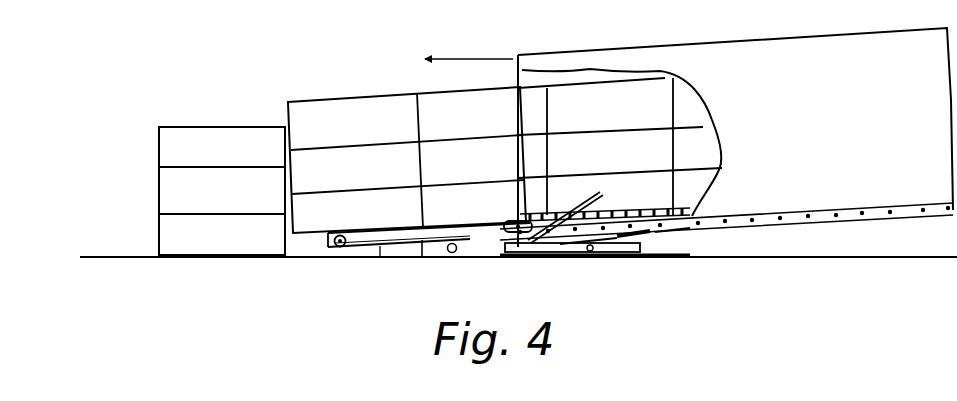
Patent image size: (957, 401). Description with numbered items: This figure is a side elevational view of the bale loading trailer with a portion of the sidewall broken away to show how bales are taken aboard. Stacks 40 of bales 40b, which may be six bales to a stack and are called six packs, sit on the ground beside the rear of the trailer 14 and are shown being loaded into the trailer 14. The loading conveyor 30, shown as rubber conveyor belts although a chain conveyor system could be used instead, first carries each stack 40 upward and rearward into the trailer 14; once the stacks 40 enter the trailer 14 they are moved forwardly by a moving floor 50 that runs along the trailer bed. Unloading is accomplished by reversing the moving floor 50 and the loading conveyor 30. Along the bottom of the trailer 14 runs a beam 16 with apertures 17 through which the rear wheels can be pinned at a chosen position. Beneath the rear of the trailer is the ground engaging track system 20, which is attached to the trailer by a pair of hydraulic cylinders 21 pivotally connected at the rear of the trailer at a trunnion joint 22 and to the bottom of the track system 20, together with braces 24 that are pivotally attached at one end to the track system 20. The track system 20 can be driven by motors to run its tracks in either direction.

The trailer 14 is at (785, 48).
The beam 16 is at (848, 215).
The apertures 17 is at (755, 225).
The ground engaging track system 20 is at (570, 262).
The hydraulic cylinders 21 is at (566, 215).
The trunnion joint 22 is at (533, 257).
The braces 24 is at (609, 246).
The loading conveyor 30 is at (400, 254).
The stacks 40 is at (183, 125).
The bales 40b is at (222, 191).
The moving floor 50 is at (663, 232).